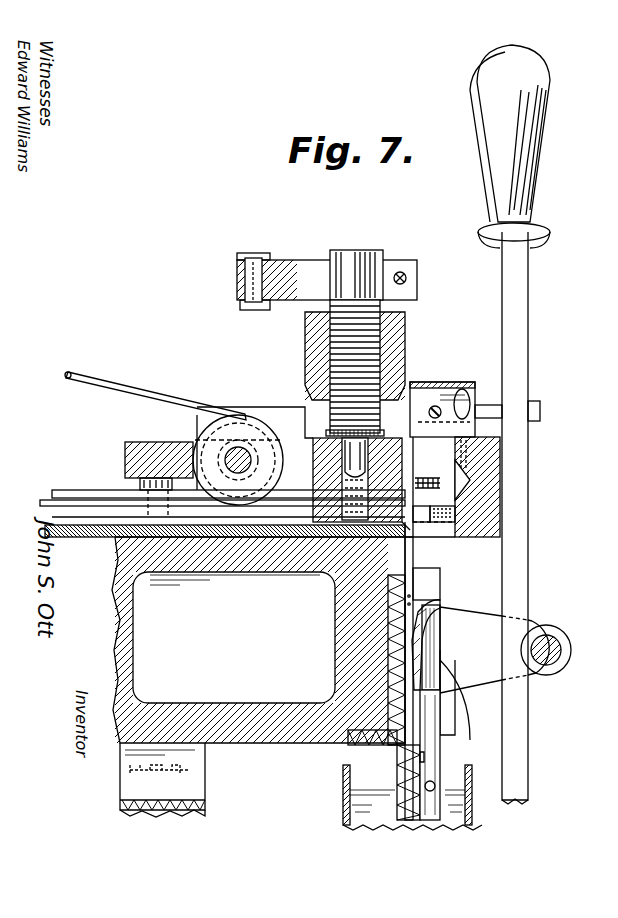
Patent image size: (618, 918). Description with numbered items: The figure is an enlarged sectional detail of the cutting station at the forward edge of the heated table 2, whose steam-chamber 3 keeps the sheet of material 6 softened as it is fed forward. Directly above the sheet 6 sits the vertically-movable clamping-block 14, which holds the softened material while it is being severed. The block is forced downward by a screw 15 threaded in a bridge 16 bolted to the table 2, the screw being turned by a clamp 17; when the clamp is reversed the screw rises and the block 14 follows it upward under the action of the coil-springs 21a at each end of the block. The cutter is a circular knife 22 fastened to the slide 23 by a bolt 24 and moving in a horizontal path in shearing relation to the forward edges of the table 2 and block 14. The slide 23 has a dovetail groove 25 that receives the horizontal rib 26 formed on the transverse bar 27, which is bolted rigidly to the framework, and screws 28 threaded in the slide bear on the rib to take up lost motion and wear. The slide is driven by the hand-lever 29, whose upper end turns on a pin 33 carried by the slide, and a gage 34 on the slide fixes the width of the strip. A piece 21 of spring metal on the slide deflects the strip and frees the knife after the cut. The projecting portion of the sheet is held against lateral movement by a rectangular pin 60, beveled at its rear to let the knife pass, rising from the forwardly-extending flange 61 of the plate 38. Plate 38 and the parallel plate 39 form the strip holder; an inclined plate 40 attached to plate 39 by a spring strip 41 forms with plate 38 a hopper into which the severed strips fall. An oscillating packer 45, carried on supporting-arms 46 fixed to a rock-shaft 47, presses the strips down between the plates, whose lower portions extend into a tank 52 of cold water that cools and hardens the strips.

The table 2 is at (239, 677).
The steam-chamber 3 is at (234, 637).
The sheet of material 6 is at (66, 537).
The clamping-block 14 is at (312, 440).
The screw 15 is at (366, 252).
The bridge 16 is at (405, 330).
The clamp 17 is at (306, 262).
The piece of spring metal 21 is at (412, 540).
The coil-springs 21a is at (313, 496).
The circular knife 22 is at (405, 462).
The slide 23 is at (431, 435).
The bolt 24 is at (405, 500).
The dovetail groove 25 is at (475, 514).
The horizontal rib 26 is at (470, 482).
The bar 27 is at (490, 494).
The screws 28 is at (475, 452).
The hand-lever 29 is at (519, 553).
The pin 33 is at (470, 382).
The gage 34 is at (441, 510).
The plate 38 is at (397, 760).
The plate 39 is at (424, 758).
The inclined plate 40 is at (432, 630).
The spring strip 41 is at (430, 733).
The packer 45 is at (463, 683).
The supporting-arms 46 is at (524, 643).
The rock-shaft 47 is at (561, 650).
The tank 52 is at (472, 815).
The rectangular pin 60 is at (413, 566).
The flange 61 is at (440, 584).